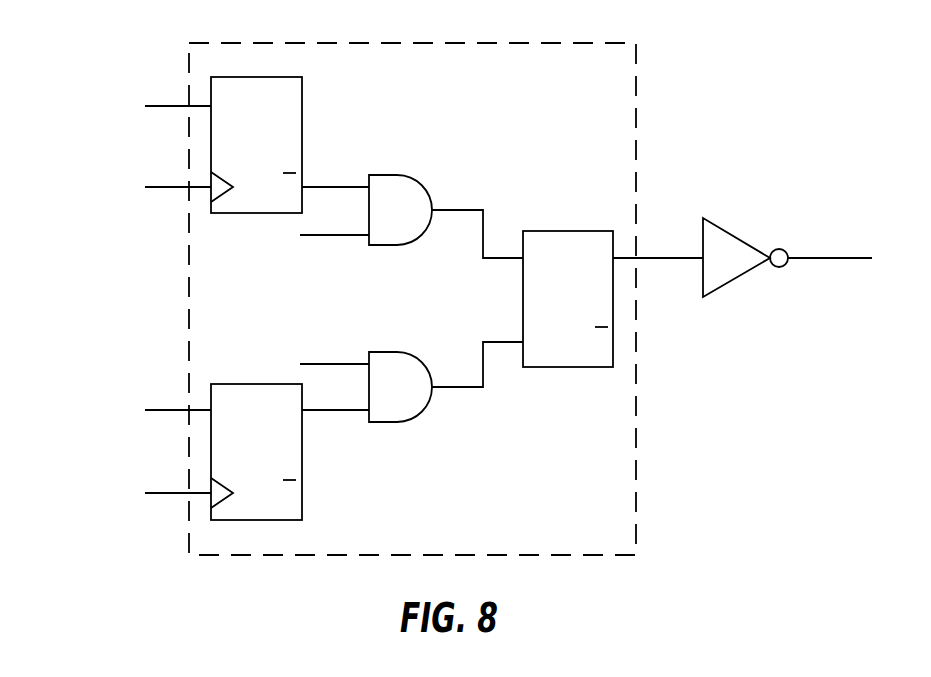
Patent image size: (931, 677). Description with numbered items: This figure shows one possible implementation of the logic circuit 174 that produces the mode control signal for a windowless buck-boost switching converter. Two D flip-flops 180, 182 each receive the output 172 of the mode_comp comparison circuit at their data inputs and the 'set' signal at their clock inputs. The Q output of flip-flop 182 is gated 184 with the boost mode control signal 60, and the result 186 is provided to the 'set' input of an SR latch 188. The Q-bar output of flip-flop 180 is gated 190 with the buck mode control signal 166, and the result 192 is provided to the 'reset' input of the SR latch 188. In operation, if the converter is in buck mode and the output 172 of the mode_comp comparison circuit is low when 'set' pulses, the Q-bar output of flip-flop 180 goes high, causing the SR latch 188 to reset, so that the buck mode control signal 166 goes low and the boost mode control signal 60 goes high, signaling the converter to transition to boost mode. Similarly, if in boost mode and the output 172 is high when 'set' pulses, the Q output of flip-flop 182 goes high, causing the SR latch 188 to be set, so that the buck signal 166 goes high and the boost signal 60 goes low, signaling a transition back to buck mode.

The logic circuit 174 is at (425, 42).
The D flip-flop 180 is at (258, 77).
The D flip-flop 182 is at (240, 384).
The output of the mode_comp comparison circuit 172 is at (162, 103).
The gate 190 is at (397, 175).
The gate 184 is at (397, 352).
The result 192 is at (455, 210).
The result 186 is at (455, 388).
The SR latch 188 is at (560, 231).
The mode control signal (buck) 166 is at (336, 238).
The mode control signal (boost) 60 is at (337, 361).